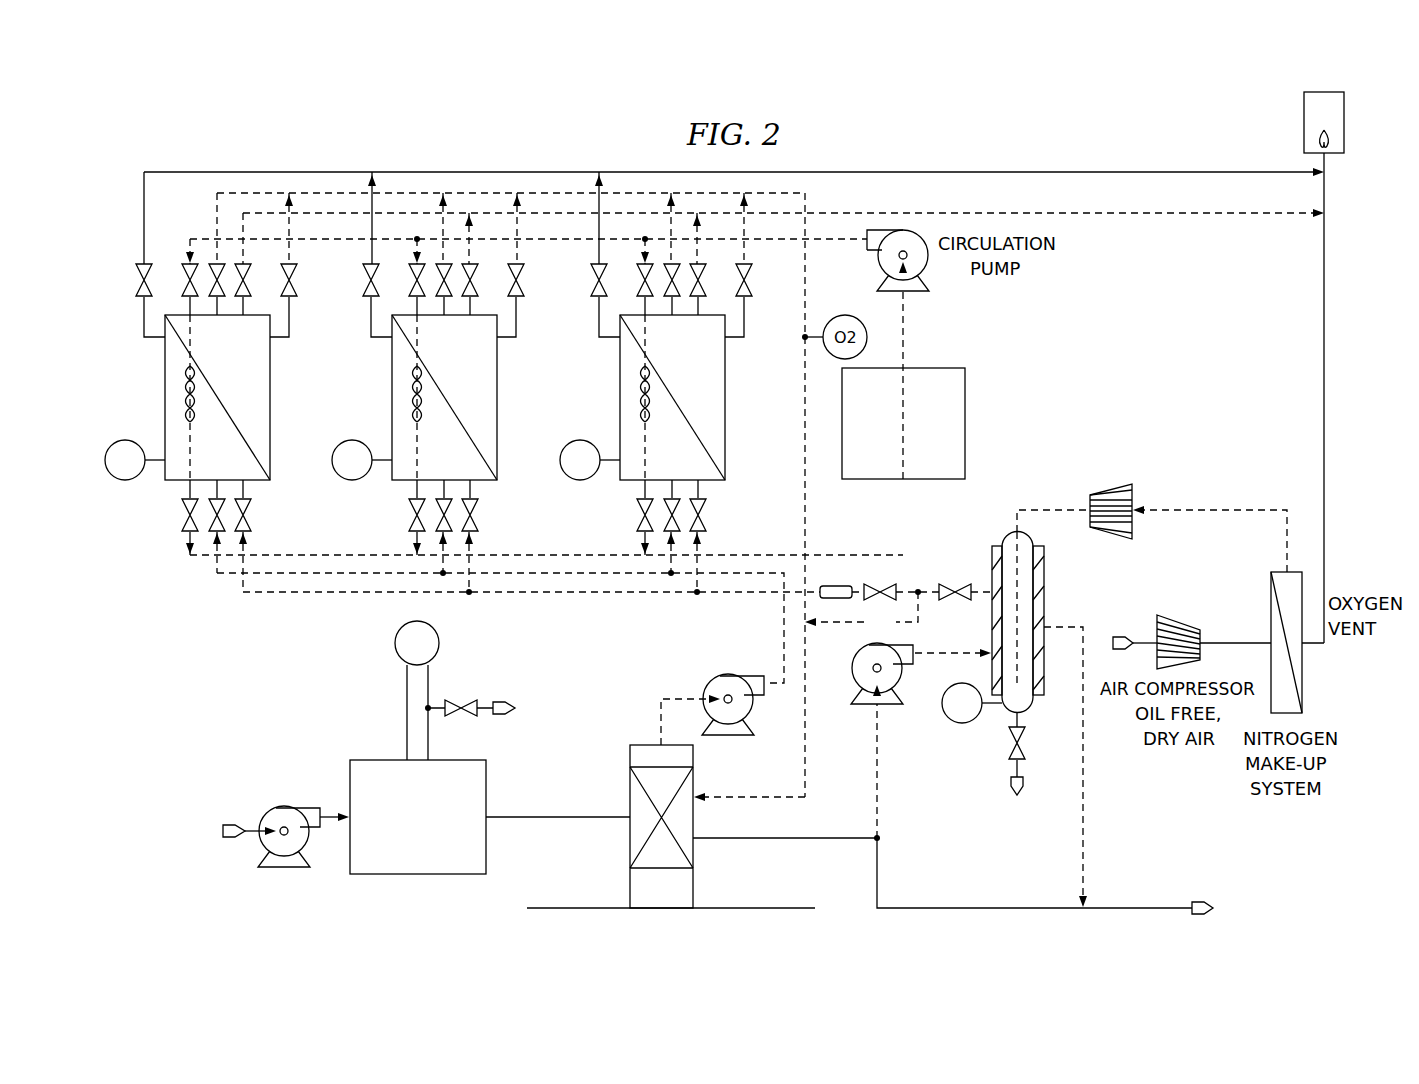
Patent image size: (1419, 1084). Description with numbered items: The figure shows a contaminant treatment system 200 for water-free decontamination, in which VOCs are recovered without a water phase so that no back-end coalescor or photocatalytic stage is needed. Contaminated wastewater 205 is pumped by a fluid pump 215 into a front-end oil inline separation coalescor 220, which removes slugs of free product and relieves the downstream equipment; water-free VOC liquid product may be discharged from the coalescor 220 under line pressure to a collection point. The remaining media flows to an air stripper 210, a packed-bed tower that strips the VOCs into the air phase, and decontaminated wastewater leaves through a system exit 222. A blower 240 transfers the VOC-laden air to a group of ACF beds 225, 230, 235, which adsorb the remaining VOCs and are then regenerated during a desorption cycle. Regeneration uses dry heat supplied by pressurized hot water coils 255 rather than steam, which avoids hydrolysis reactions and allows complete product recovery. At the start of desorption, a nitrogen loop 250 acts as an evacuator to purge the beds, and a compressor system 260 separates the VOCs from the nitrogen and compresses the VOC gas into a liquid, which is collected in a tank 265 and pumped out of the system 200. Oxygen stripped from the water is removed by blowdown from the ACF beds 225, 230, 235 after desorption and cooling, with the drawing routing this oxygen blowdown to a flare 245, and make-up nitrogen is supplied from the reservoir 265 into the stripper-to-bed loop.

The contaminant treatment system 200 is at (323, 145).
The contaminated wastewater 205 is at (230, 826).
The air stripper 210 is at (630, 888).
The fluid pump 215 is at (300, 809).
The oil inline separation (OILS) coalescor 220 is at (418, 875).
The system exit 222 is at (1197, 902).
The ACF bed 225 is at (270, 412).
The ACF bed 230 is at (493, 412).
The ACF bed 235 is at (722, 448).
The blower 240 is at (728, 735).
The flare 245 is at (1344, 120).
The nitrogen loop 250 is at (1262, 478).
The pressurized hot water coils 255 is at (965, 399).
The compressor system 260 is at (918, 748).
The tank 265 is at (992, 572).